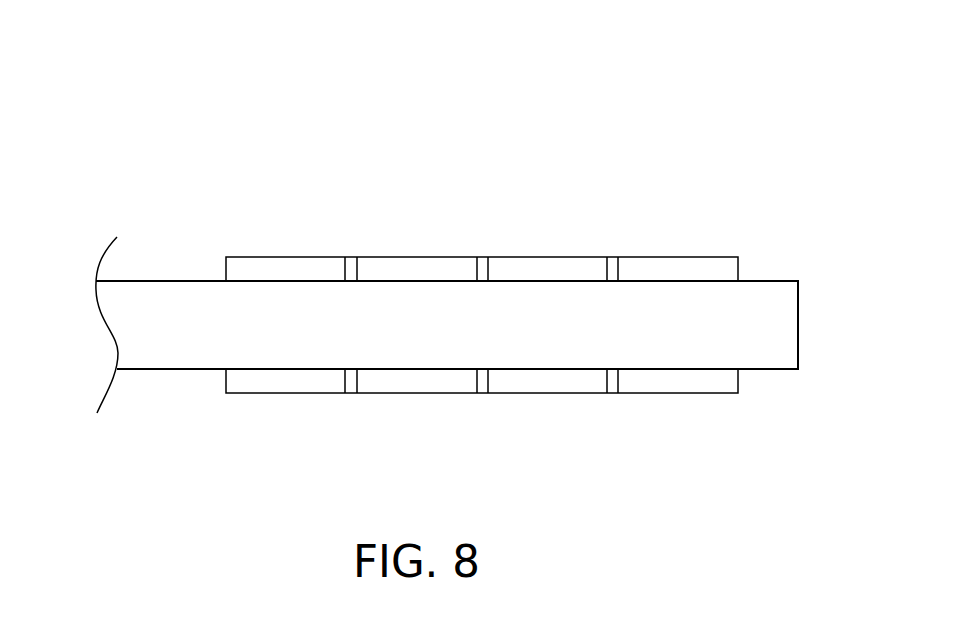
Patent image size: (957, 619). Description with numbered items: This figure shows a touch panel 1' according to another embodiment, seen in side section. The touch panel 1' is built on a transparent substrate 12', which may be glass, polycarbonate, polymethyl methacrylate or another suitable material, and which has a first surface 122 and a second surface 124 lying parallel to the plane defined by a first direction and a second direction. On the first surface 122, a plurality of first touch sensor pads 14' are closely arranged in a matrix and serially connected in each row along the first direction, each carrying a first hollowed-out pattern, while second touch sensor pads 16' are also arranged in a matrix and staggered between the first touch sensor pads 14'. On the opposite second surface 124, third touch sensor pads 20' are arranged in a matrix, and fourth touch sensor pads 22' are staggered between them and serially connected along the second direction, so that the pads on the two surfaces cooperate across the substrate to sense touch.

The touch panel 1' is at (77, 93).
The transparent substrate 12' is at (479, 325).
The first surface 122 is at (770, 281).
The second surface 124 is at (770, 369).
The first touch sensor pads 14' is at (482, 233).
The second touch sensor pads 16' is at (478, 233).
The third touch sensor pads 20' is at (482, 416).
The fourth touch sensor pads 22' is at (477, 416).